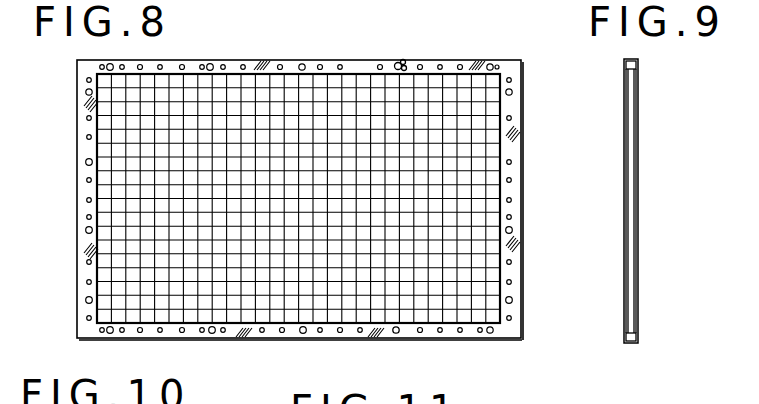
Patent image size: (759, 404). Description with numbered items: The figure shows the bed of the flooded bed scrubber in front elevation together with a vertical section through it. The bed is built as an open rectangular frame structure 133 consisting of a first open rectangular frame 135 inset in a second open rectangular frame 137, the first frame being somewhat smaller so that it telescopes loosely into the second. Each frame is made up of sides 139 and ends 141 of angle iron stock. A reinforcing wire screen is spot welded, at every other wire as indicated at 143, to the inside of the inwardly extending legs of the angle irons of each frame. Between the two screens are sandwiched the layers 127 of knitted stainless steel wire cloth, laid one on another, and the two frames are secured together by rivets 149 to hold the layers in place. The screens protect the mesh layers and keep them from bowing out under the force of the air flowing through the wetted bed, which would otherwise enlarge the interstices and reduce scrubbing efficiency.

In FIG. 9, the layers of open-mesh material 127 is at (631, 158).
In FIG. 8, the open rectangular frame structure 133 is at (78, 340).
In FIG. 9, the open rectangular frame structure 133 is at (628, 60).
In FIG. 9, the first open rectangular frame 135 is at (639, 225).
In FIG. 9, the second open rectangular frame 137 is at (622, 260).
In FIG. 8, the sides 139 is at (273, 60).
In FIG. 8, the ends 141 is at (77, 173).
In FIG. 8, the spot welds 143 is at (360, 66).
In FIG. 8, the rivets 149 is at (403, 62).